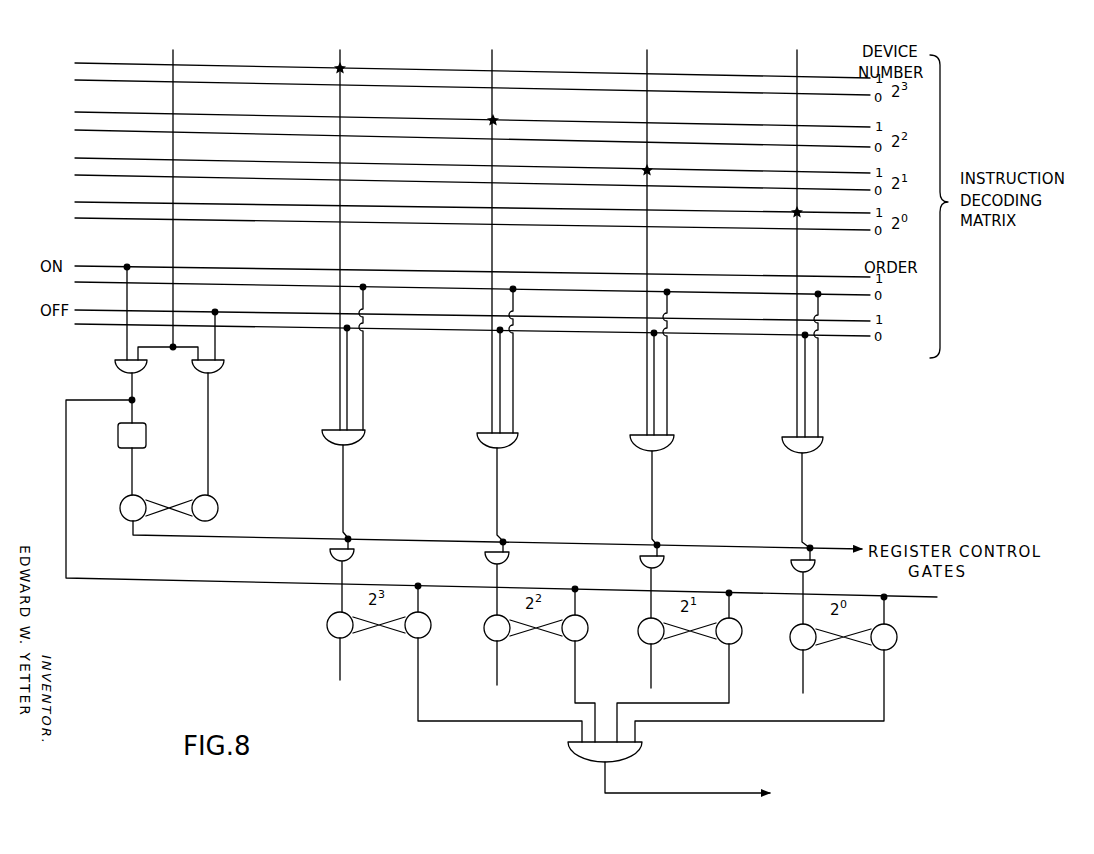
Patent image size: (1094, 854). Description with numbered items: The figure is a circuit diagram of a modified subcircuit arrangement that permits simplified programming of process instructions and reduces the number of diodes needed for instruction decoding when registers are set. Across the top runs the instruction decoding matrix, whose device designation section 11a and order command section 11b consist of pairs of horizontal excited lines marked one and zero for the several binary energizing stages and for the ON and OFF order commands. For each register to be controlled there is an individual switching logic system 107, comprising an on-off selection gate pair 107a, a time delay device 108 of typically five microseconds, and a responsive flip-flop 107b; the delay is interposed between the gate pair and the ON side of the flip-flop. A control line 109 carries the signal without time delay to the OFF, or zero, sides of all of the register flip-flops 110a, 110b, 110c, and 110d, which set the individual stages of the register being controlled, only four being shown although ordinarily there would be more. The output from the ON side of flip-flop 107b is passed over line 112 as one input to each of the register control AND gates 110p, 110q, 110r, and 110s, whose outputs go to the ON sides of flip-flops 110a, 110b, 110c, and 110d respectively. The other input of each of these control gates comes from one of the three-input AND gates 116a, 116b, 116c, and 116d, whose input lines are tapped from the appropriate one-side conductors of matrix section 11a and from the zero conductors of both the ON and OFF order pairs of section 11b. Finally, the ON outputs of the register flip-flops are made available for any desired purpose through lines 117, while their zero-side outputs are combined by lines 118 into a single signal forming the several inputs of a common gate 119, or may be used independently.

The device designation section of instruction decoding matrix 11a is at (48, 50).
The order command section of instruction decoding matrix 11b is at (42, 252).
The switching logic system 107 is at (200, 392).
The on-off selection gate pair 107a is at (162, 358).
The responsive flip-flop 107b is at (190, 481).
The time delay device 108 is at (147, 437).
The control line 109 is at (210, 582).
The line from ON side of flip-flop 112 is at (258, 535).
The three-input AND gate 116a is at (366, 433).
The three-input AND gate 116b is at (519, 440).
The three-input AND gate 116c is at (675, 443).
The three-input AND gate 116d is at (824, 446).
The register control AND gate 110p is at (355, 556).
The register control AND gate 110q is at (510, 560).
The register control AND gate 110r is at (665, 563).
The register control AND gate 110s is at (816, 567).
The register flip-flop 110a is at (470, 675).
The register flip-flop 110b is at (626, 680).
The register flip-flop 110c is at (775, 685).
The register flip-flop 110d is at (894, 653).
The ON output lines 117 is at (811, 679).
The OFF output lines 118 is at (473, 709).
The common gate 119 is at (620, 750).